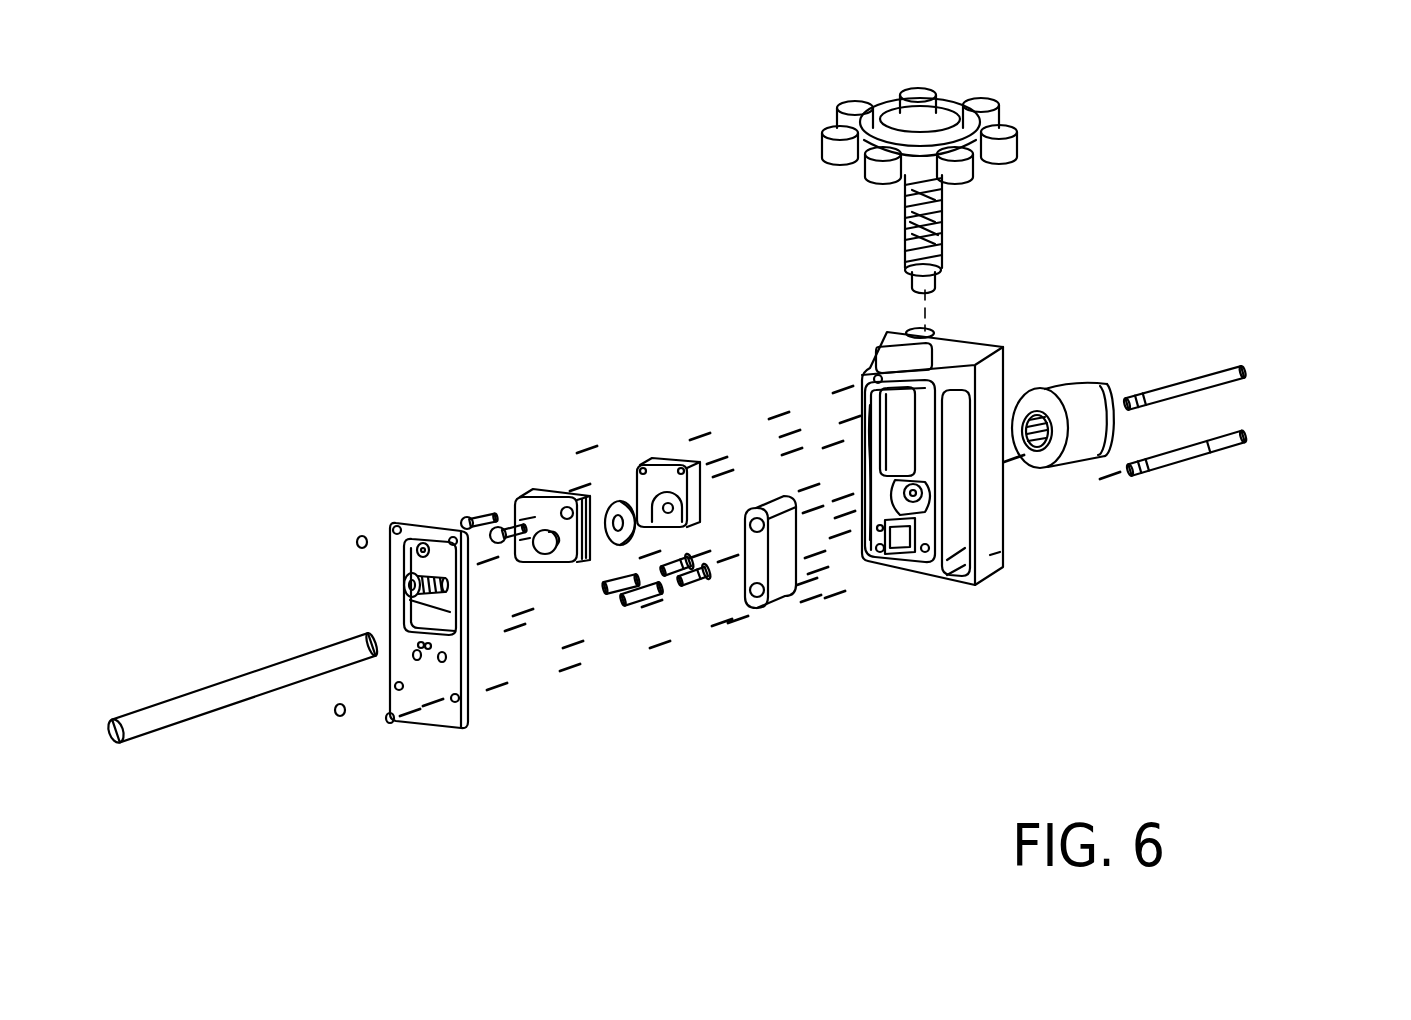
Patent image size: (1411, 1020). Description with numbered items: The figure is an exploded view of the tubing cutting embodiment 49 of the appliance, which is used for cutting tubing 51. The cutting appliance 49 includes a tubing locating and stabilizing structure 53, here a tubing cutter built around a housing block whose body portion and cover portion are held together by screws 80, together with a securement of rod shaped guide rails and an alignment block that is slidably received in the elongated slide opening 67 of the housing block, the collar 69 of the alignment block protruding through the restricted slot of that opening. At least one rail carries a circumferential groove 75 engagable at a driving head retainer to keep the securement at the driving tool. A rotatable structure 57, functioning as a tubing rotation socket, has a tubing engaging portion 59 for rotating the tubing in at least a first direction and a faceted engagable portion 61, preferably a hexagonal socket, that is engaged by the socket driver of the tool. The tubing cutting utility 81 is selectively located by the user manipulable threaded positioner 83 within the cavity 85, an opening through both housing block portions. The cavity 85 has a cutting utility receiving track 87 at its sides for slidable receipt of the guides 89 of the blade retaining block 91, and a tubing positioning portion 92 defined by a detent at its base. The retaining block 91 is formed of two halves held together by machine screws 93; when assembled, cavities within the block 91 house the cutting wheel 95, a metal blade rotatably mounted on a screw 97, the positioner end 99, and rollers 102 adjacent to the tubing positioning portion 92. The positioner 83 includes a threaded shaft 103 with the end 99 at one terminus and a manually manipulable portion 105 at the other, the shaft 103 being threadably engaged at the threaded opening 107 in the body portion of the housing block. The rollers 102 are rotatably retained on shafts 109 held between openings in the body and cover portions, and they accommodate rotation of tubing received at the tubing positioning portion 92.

The tubing cutting embodiment 49 is at (613, 323).
The tubing 51 is at (157, 713).
The tubing locating and stabilizing structure 53 is at (992, 572).
The rotatable structure 57 is at (1075, 395).
The tubing engaging portion 59 is at (1013, 440).
The faceted engagable portion 61 is at (1115, 392).
The elongated slide opening 67 is at (970, 557).
The collar 69 is at (795, 500).
The circumferential groove 75 is at (1195, 450).
The screws 80 is at (355, 537).
The tubing cutting utility 81 is at (584, 452).
The threaded positioner 83 is at (943, 213).
The cavity 85 is at (890, 405).
The cutting utility receiving track 87 is at (878, 445).
The guides 89 is at (502, 527).
The blade retaining block 91 is at (657, 463).
The tubing positioning portion 92 is at (908, 558).
The machine screws 93 is at (484, 515).
The cutting wheel 95 is at (617, 500).
The screw 97 is at (404, 586).
The positioner end 99 is at (943, 282).
The rollers 102 is at (693, 587).
The threaded shaft 103 is at (905, 230).
The manually manipulable portion 105 is at (987, 100).
The threaded opening 107 is at (913, 323).
The shafts 109 is at (613, 600).